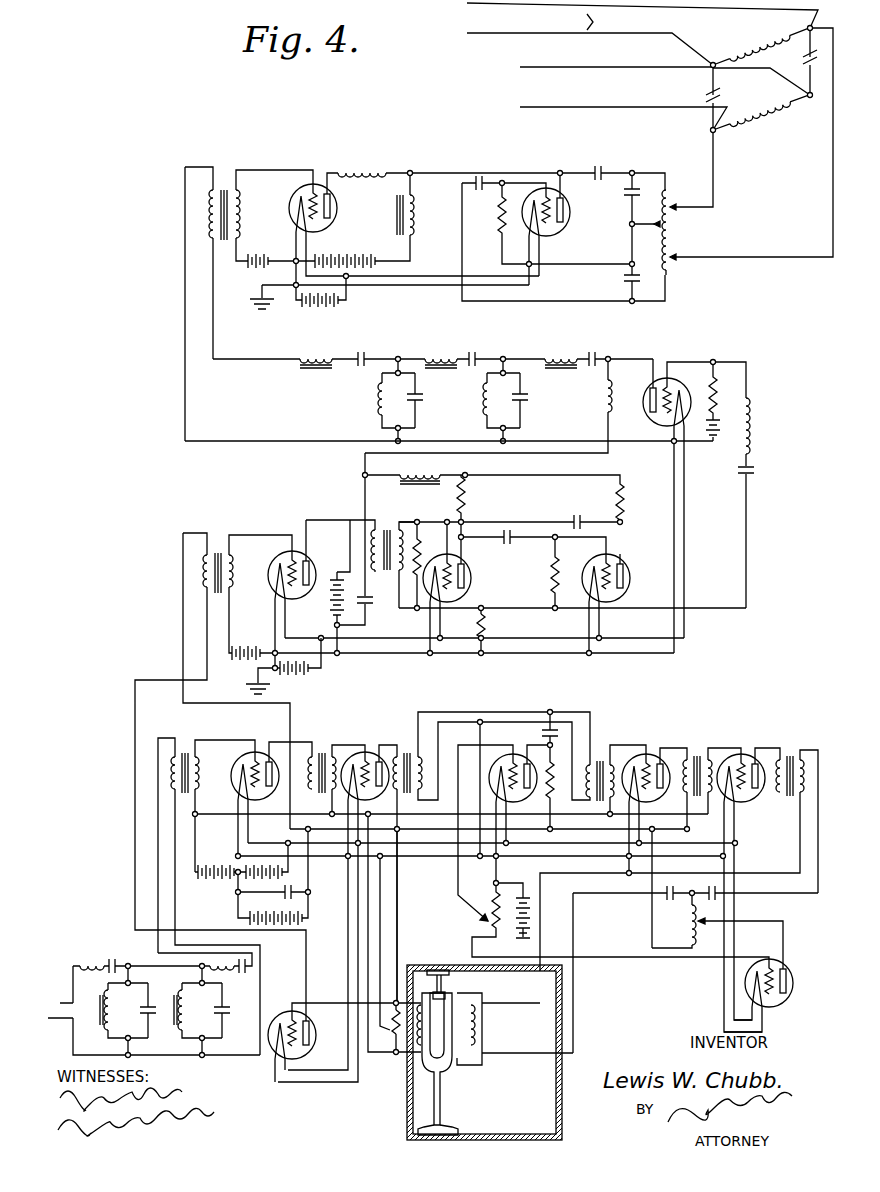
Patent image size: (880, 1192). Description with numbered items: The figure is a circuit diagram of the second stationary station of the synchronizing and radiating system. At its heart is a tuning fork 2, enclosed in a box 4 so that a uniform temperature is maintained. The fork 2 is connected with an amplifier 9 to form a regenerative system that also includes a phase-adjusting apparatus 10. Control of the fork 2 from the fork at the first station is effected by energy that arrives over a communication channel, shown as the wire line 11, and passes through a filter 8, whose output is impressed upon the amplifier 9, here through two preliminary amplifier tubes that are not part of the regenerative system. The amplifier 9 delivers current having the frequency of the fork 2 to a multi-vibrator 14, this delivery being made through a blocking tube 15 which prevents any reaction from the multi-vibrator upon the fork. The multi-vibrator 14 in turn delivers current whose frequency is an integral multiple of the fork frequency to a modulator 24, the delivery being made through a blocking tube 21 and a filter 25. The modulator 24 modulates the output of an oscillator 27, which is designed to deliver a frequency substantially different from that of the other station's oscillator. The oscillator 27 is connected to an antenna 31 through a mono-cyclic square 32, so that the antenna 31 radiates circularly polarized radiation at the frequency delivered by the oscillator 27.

The antenna 31 is at (645, 15).
The mono-cyclic square 32 is at (762, 101).
The modulator 24 is at (410, 163).
The oscillator 27 is at (564, 215).
The filter 25 is at (547, 349).
The blocking tube 21 is at (677, 490).
The multi-vibrator 14 is at (540, 516).
The blocking tube 15 is at (290, 582).
The amplifier 9 is at (718, 738).
The phase-adjusting apparatus 10 is at (801, 972).
The filter 8 is at (225, 1105).
The wire line 11 is at (60, 1002).
The box 4 is at (407, 1108).
The tuning fork 2 is at (441, 1093).